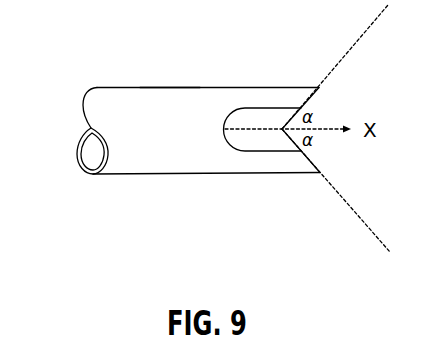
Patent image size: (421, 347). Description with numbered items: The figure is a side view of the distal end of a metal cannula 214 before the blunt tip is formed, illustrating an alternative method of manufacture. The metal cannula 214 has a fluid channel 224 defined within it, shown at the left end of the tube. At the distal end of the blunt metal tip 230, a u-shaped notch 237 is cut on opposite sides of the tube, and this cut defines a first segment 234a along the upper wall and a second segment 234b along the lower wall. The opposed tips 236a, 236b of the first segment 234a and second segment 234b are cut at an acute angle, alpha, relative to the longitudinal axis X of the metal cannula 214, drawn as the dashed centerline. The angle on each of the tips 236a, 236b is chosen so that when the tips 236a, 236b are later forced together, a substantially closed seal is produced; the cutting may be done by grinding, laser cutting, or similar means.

The metal cannula 214 is at (108, 95).
The fluid channel 224 is at (86, 127).
The blunt metal tip 230 is at (165, 88).
The first segment 234a is at (258, 91).
The second segment 234b is at (258, 165).
The tip of first segment 236a is at (310, 99).
The tip of second segment 236b is at (303, 158).
The u-shaped notch 237 is at (243, 132).